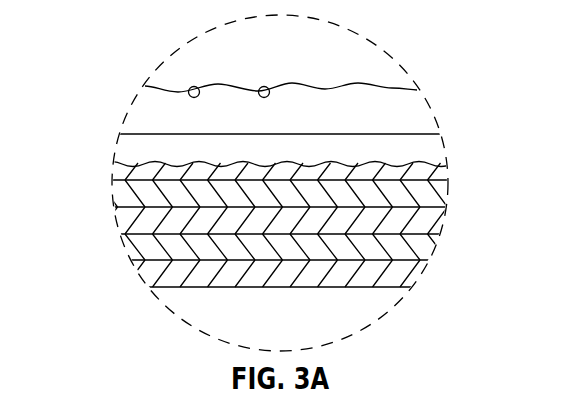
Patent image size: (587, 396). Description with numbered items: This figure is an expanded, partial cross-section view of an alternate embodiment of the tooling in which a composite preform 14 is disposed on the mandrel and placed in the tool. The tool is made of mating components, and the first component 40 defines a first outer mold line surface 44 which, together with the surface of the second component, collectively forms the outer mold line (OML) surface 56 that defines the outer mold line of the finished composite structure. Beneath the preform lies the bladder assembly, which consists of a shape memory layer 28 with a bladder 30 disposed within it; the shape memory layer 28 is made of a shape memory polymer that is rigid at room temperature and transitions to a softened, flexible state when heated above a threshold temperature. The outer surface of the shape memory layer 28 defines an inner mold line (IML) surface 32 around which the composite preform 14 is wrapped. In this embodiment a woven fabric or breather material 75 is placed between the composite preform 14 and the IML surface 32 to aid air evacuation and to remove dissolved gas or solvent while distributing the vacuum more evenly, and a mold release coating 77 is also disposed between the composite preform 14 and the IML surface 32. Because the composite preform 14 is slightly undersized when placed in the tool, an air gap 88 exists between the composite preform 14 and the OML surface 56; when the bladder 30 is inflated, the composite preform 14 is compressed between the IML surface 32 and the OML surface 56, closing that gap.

The composite preform 14 is at (440, 170).
The shape memory layer 28 is at (432, 247).
The bladder 30 is at (417, 273).
The inner mold line (IML) surface 32 is at (143, 229).
The first component 40 is at (316, 85).
The first outer mold line (OML) surface 44 is at (265, 87).
The outer mold line (OML) surface 56 is at (197, 87).
The breather material 75 is at (441, 197).
The mold release coating 77 is at (438, 221).
The air gap 88 is at (433, 143).